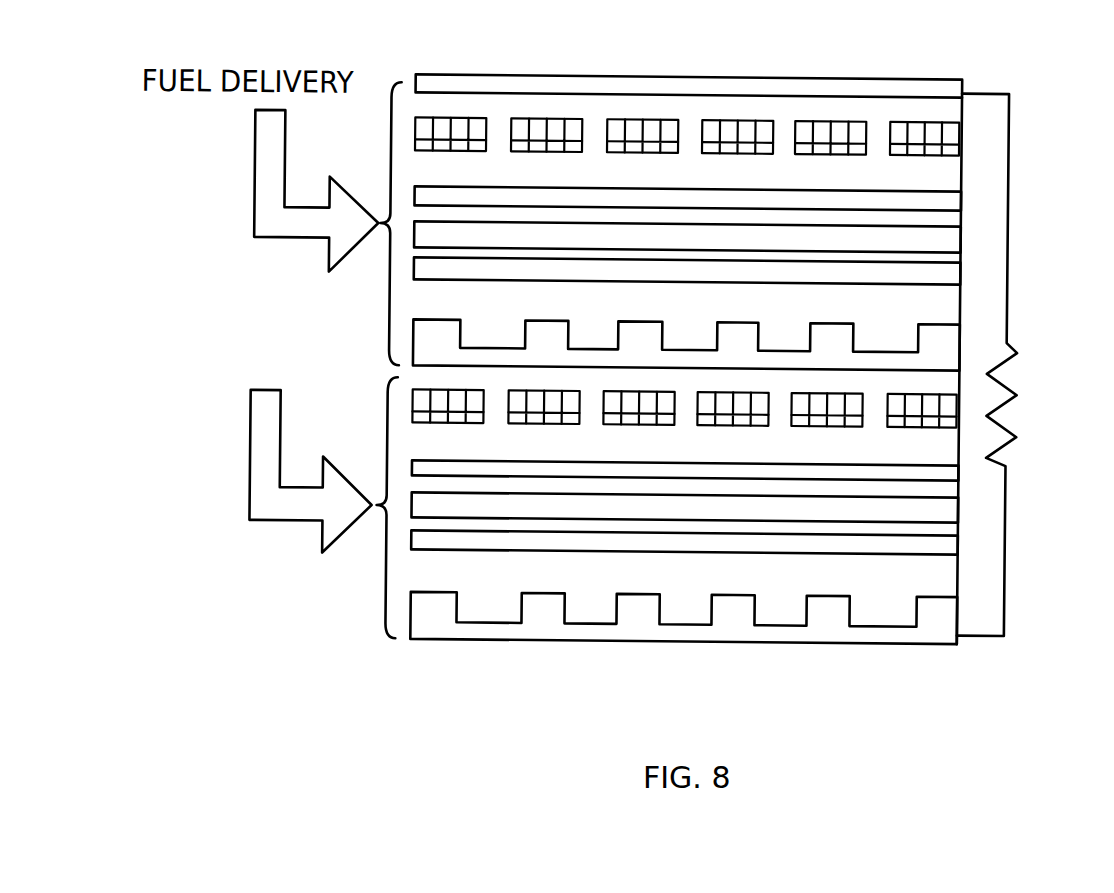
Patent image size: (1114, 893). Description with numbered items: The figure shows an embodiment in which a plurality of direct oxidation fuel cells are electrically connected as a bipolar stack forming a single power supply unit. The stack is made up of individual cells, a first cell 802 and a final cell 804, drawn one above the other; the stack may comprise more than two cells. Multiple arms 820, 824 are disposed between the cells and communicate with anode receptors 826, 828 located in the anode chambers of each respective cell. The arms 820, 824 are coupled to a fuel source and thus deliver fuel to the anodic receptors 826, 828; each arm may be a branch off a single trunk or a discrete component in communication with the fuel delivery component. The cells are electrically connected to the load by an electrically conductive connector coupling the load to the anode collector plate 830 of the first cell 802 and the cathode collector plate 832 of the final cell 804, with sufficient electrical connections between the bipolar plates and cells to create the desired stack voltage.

The first cell 802 is at (946, 112).
The final cell 804 is at (959, 579).
The arm 820 is at (253, 174).
The arm 824 is at (251, 459).
The anode receptor 826 is at (418, 154).
The anode receptor 828 is at (420, 425).
The anode collector plate 830 is at (912, 78).
The cathode collector plate 832 is at (905, 641).